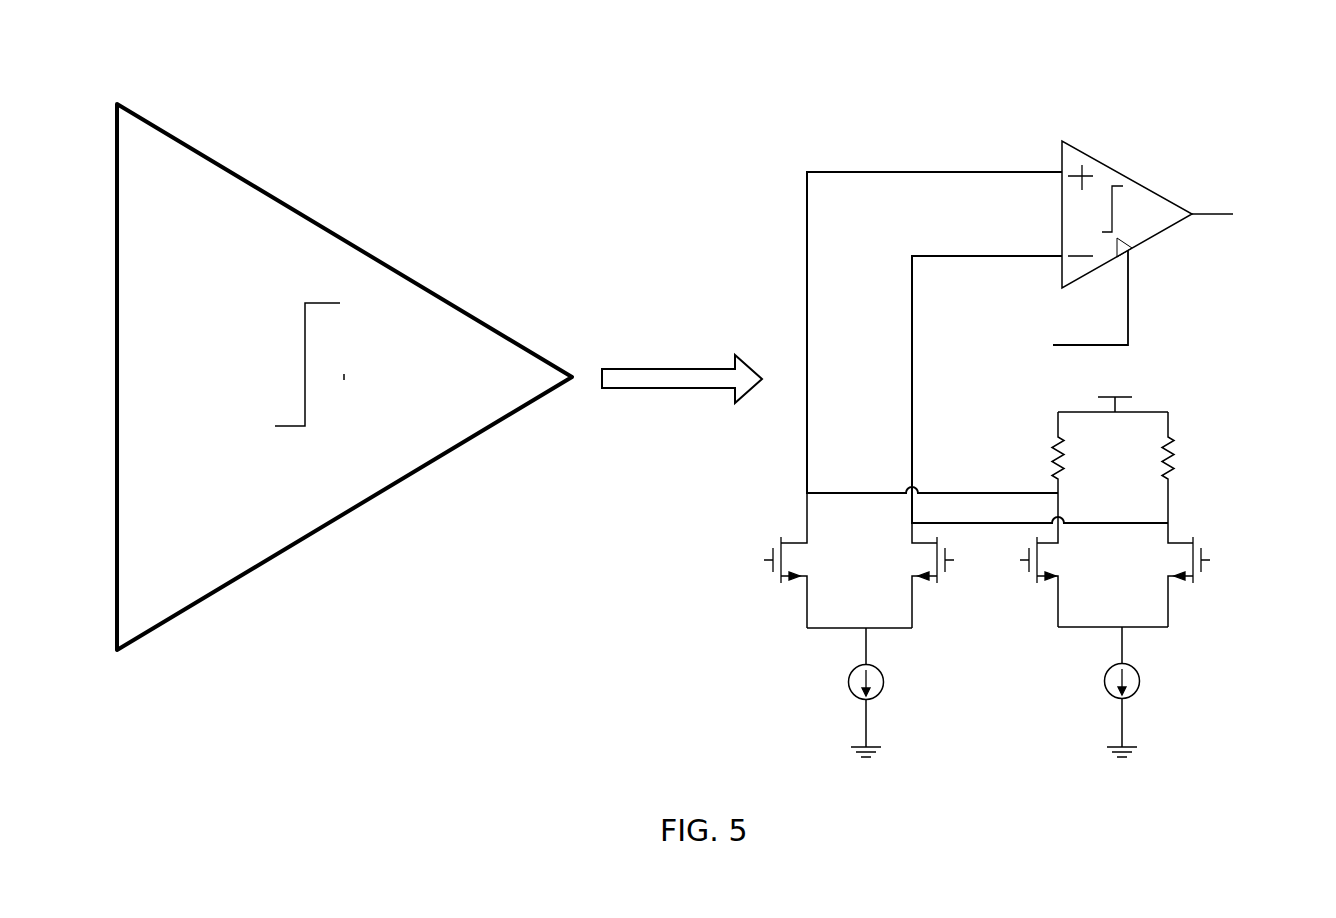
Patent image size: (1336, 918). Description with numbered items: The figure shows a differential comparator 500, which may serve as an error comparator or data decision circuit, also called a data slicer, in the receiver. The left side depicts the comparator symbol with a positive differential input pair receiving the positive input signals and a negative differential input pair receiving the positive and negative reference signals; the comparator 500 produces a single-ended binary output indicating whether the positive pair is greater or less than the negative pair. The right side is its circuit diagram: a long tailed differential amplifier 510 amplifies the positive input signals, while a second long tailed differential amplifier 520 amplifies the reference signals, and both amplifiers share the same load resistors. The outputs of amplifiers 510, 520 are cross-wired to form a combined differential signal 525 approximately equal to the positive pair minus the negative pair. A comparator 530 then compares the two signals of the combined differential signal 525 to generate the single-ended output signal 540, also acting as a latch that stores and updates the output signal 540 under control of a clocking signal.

The differential comparator 500 is at (715, 398).
The long tailed differential amplifier 510 is at (793, 647).
The long tailed differential amplifier 520 is at (1178, 647).
The combined differential signal 525 is at (970, 210).
The comparator 530 is at (1147, 176).
The output signal 540 is at (567, 344).